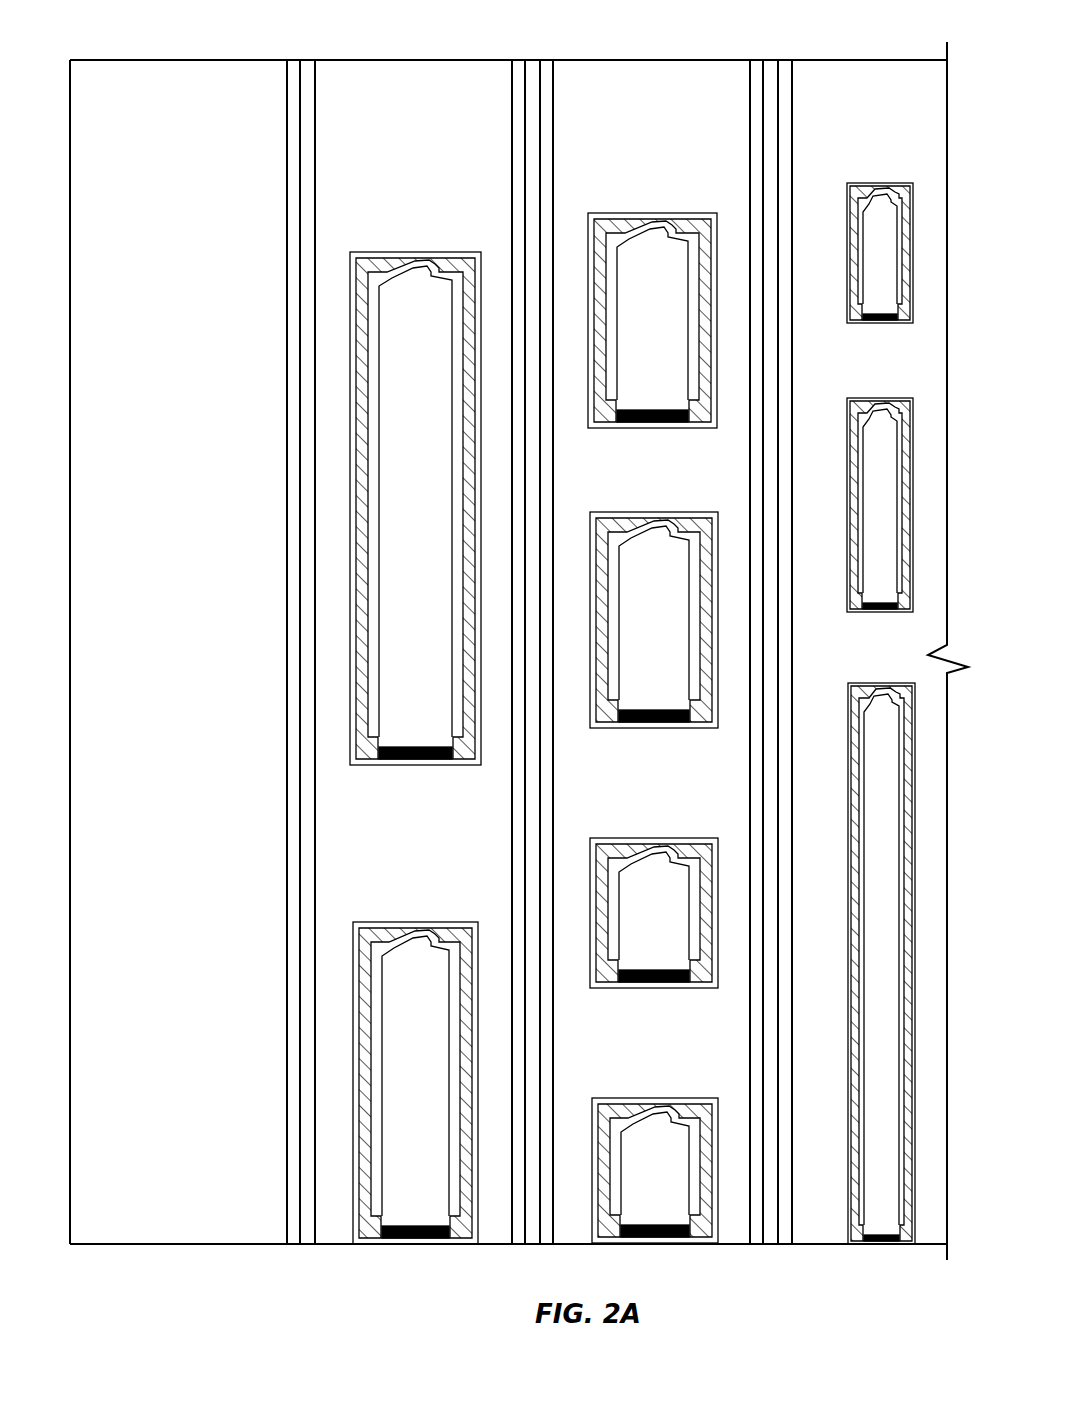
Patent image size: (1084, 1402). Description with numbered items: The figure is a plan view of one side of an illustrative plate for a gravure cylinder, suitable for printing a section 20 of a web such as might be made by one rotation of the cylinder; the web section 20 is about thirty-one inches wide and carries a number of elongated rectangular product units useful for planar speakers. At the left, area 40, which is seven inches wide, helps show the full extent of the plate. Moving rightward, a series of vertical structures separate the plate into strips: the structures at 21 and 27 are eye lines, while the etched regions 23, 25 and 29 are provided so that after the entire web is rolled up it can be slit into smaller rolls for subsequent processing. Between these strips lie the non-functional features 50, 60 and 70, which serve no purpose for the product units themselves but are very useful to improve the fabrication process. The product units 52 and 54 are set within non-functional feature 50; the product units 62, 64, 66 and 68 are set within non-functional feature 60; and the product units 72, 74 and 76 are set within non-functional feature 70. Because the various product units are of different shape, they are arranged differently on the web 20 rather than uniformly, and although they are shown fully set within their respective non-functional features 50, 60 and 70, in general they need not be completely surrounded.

The web section 20 is at (200, 40).
The eye line 21 is at (288, 1246).
The etched region 23 is at (315, 1246).
The etched region 25 is at (525, 1246).
The eye line 27 is at (540, 1246).
The etched region 29 is at (553, 1246).
The area 40 is at (114, 107).
The non-functional feature 50 is at (359, 107).
The product unit 52 is at (377, 252).
The product unit 54 is at (380, 922).
The non-functional feature 60 is at (596, 107).
The product unit 62 is at (615, 213).
The product unit 64 is at (617, 512).
The product unit 66 is at (617, 838).
The product unit 68 is at (619, 1098).
The non-functional feature 70 is at (829, 107).
The product unit 72 is at (874, 183).
The product unit 74 is at (874, 398).
The product unit 76 is at (875, 683).